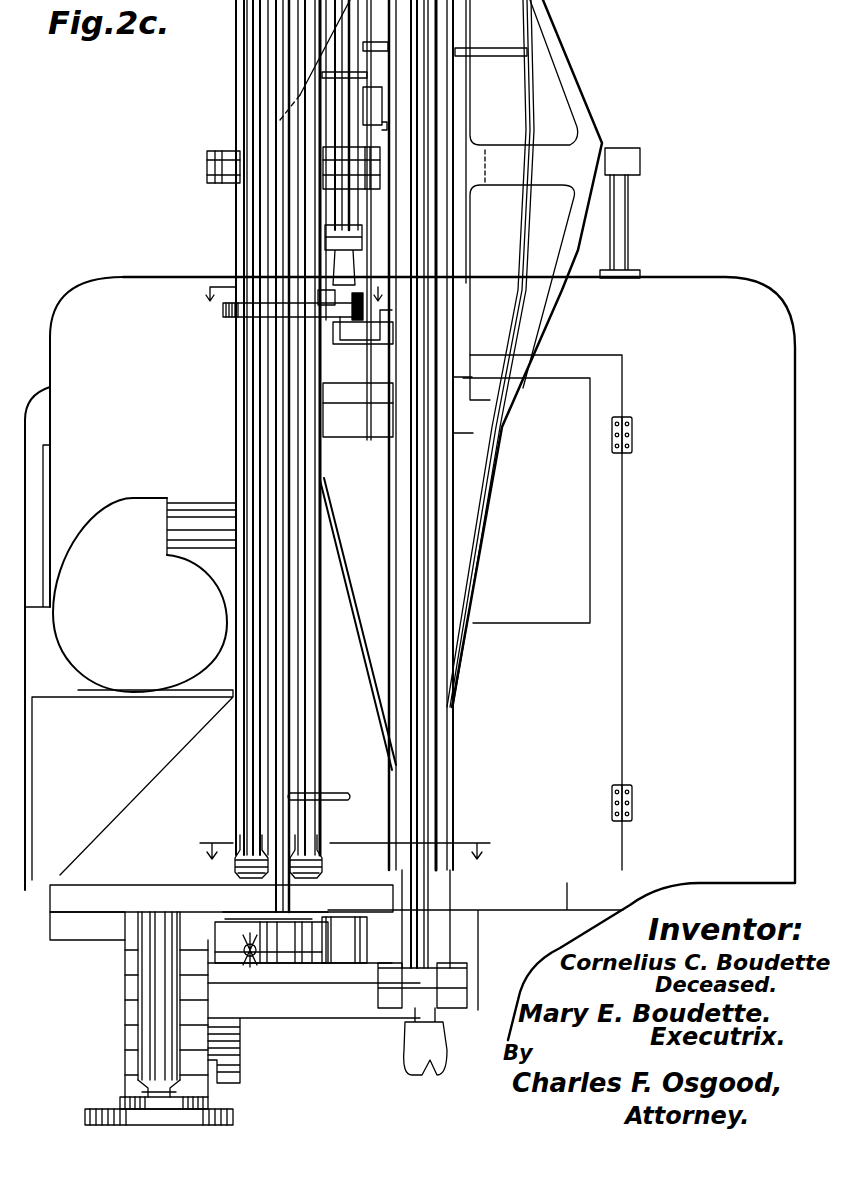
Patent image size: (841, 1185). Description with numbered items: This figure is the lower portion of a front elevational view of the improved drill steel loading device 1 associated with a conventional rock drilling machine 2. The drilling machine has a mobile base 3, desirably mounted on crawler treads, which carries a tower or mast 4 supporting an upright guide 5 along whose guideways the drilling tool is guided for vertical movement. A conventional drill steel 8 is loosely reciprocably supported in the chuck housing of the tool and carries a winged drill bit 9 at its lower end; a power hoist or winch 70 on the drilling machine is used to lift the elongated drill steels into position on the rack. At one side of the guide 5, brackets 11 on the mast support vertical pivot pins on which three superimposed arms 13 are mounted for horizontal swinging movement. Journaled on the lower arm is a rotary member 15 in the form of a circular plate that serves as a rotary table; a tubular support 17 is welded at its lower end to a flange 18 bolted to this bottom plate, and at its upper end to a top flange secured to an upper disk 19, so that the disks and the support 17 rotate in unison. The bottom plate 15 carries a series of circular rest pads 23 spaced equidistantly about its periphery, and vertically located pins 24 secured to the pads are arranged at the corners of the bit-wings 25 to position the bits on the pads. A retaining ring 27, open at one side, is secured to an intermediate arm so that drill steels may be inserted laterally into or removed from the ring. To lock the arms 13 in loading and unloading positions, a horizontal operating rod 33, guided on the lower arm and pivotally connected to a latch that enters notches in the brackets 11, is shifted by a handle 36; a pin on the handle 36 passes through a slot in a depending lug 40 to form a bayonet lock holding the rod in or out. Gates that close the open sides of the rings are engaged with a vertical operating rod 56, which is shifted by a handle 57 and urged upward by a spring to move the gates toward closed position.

The drill steel loading device 1 is at (230, 757).
The rock drilling machine 2 is at (718, 275).
The mobile base 3 is at (490, 1030).
The tower or mast 4 is at (582, 76).
The upright guide 5 is at (400, 484).
The drill steel 8 is at (248, 458).
The winged drill bit 9 is at (238, 892).
The brackets 11 is at (358, 332).
The superimposed arms 13 is at (308, 312).
The rotary member 15 is at (312, 950).
The tubular support 17 is at (282, 632).
The flange 18 is at (276, 311).
The upper disk 19 is at (368, 313).
The rest pads 23 is at (212, 900).
The pins 24 is at (248, 880).
The bit-wings 25 is at (250, 908).
The retaining ring 27 is at (230, 322).
The horizontal operating rod 33 is at (322, 298).
The handle 36 is at (270, 983).
The depending lug 40 is at (245, 958).
The vertical operating rod 56 is at (323, 722).
The handle 57 is at (338, 800).
The power hoist or winch 70 is at (322, 183).